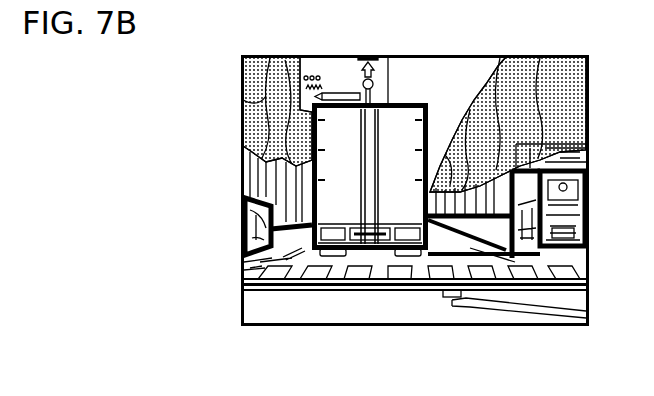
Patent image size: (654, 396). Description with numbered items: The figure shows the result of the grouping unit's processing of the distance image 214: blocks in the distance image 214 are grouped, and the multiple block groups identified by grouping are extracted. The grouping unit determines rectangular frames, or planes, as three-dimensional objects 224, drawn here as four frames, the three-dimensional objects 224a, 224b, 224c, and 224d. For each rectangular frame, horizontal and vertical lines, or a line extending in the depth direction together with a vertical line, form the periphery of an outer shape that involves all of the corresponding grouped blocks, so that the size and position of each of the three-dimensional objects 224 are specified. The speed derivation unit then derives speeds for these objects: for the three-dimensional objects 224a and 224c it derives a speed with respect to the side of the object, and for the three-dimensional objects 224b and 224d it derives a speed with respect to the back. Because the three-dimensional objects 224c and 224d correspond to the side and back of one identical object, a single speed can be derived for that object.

The distance image 214 is at (506, 41).
The three-dimensional objects 224 is at (434, 248).
The three-dimensional object 224a is at (247, 292).
The three-dimensional object 224b is at (357, 246).
The three-dimensional object 224c is at (500, 214).
The three-dimensional object 224d is at (567, 257).